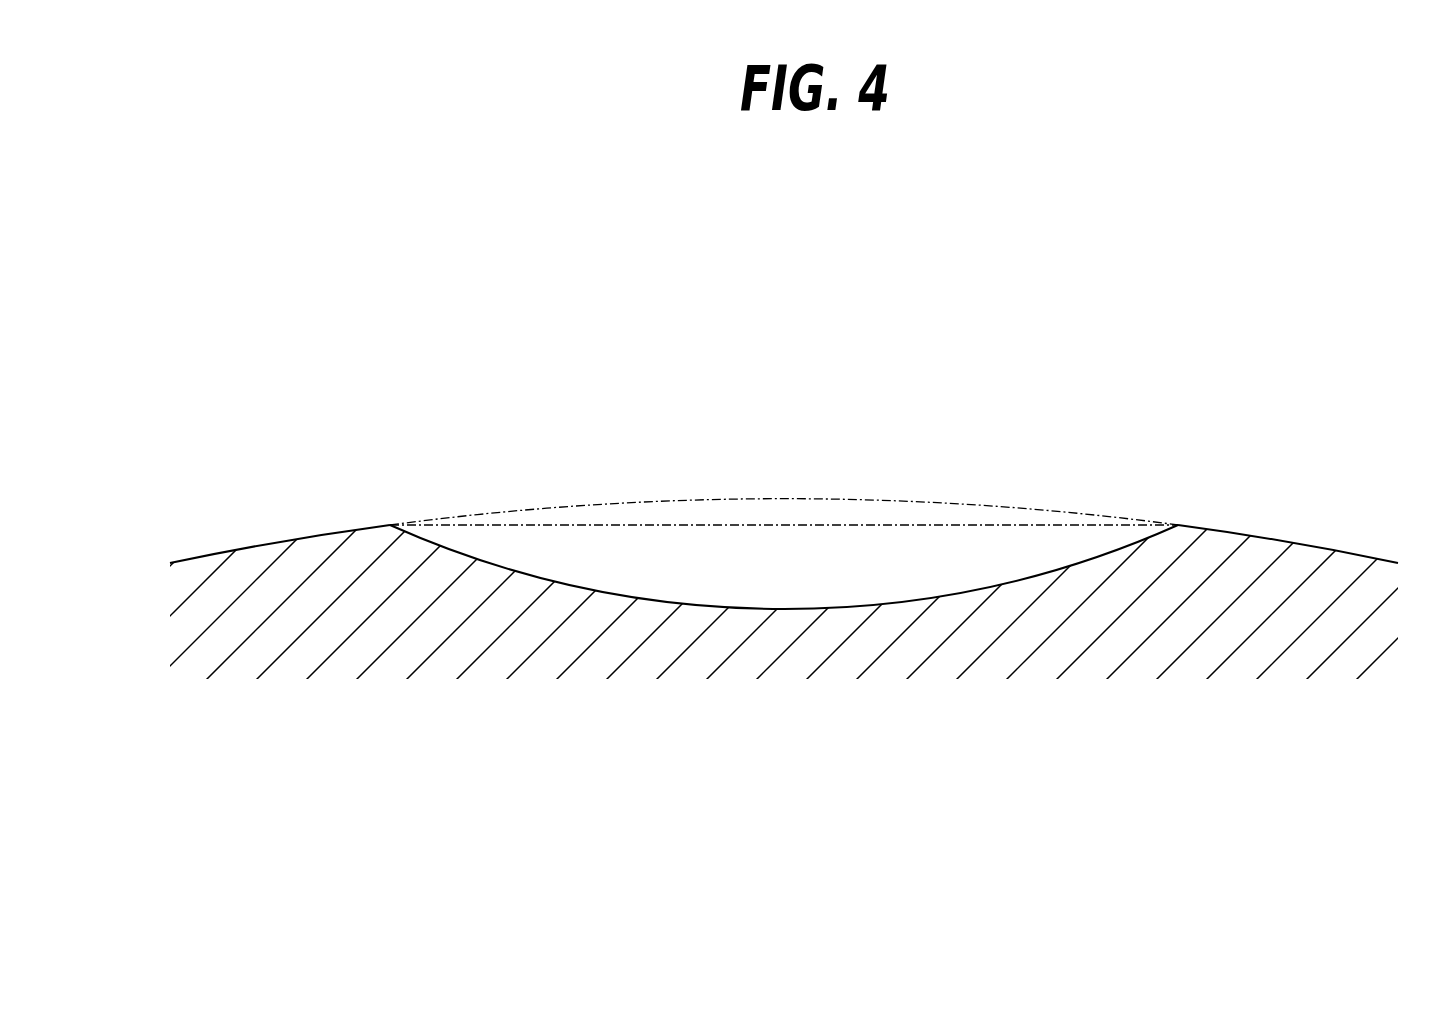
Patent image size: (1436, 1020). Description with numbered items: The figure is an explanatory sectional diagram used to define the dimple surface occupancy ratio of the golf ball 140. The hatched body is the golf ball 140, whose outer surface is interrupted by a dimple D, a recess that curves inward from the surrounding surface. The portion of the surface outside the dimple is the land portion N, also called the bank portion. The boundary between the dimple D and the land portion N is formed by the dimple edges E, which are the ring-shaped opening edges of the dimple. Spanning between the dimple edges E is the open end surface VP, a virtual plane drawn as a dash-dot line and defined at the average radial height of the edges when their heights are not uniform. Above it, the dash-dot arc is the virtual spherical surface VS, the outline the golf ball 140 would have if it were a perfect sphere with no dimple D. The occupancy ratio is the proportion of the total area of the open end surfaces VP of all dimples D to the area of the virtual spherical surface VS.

The golf ball 140 is at (555, 337).
The land portion N is at (307, 535).
The dimple edge E is at (390, 525).
The dimple D is at (918, 547).
The open end surface VP is at (612, 523).
The virtual spherical surface VS is at (687, 498).